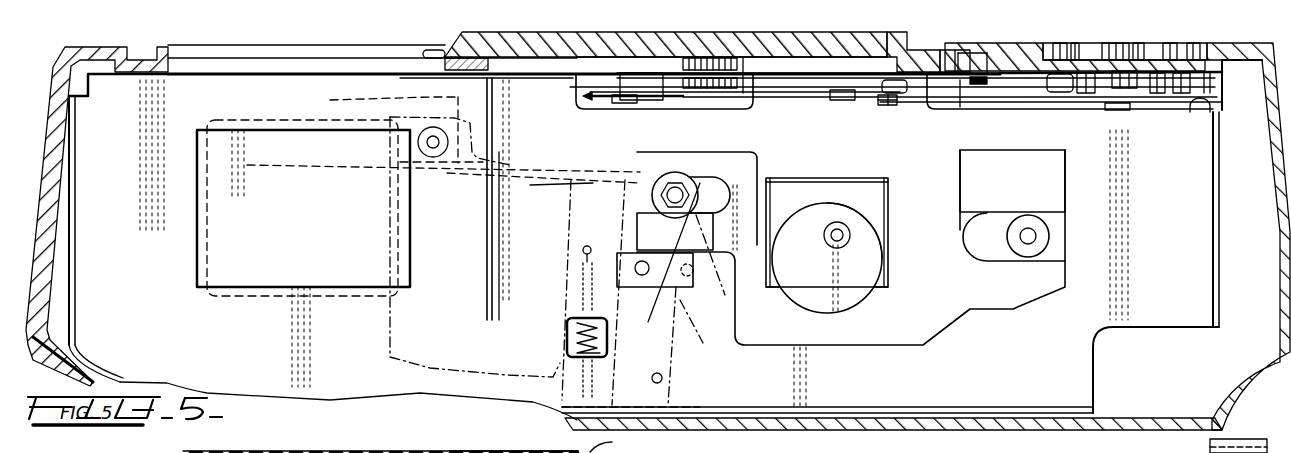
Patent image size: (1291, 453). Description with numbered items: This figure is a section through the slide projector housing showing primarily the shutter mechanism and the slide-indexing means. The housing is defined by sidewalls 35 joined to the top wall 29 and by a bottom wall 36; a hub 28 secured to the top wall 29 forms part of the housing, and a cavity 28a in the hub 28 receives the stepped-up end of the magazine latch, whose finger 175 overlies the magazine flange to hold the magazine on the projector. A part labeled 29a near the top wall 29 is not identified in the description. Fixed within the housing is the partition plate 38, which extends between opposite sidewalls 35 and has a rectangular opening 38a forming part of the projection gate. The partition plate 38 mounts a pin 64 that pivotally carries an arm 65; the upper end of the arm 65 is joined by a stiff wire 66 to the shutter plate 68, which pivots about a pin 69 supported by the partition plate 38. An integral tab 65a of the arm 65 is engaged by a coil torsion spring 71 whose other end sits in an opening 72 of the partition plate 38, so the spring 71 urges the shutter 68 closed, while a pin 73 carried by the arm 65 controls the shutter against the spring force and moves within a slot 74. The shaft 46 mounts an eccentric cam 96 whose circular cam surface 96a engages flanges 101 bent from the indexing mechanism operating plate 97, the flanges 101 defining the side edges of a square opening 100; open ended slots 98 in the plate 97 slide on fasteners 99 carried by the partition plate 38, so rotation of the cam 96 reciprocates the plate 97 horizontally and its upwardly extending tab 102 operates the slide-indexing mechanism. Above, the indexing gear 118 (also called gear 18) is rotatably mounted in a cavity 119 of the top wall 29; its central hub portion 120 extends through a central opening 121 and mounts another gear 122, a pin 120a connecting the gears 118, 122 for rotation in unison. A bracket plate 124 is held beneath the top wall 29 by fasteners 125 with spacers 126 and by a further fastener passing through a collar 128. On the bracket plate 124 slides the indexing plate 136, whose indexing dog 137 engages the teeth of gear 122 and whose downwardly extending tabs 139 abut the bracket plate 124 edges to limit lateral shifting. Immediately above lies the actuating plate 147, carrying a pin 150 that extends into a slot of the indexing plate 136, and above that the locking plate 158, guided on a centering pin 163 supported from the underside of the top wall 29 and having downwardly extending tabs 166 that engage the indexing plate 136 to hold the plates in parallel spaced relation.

The cover plate 29a is at (315, 52).
The top wall 29 is at (950, 50).
The tab 102 is at (853, 67).
The cavity 119 is at (1072, 52).
The indexing gear 118 is at (1113, 53).
The spacers 126 is at (1213, 83).
The fasteners 125 is at (1210, 110).
The indexing plate 136 is at (583, 96).
The indexing dog 137 is at (1047, 84).
The pin 150 is at (613, 82).
The locking plate 158 is at (662, 78).
The bracket plate 124 is at (677, 100).
The collar 128 is at (747, 70).
The actuating plate 147 is at (832, 90).
The tabs 139 is at (885, 105).
The tabs 166 is at (957, 85).
The centering pin 163 is at (993, 83).
The gear 122 is at (1080, 85).
The hub portion 120 is at (1110, 82).
The central opening 121 is at (1135, 67).
The pin 120a is at (1117, 110).
The shutter plate 68 is at (345, 108).
The pin 69 is at (433, 142).
The stiff wire 66 is at (587, 168).
The fasteners 99 is at (690, 180).
The square opening 100 is at (837, 182).
The circular cam surface 96a is at (845, 226).
The open ended slots 98 is at (637, 208).
The indexing mechanism operating plate 97 is at (1048, 182).
The partition plate 38 is at (125, 198).
The sidewalls 35 is at (50, 187).
The rectangular opening 38a is at (305, 287).
The opening 72 is at (583, 252).
The pin 73 is at (640, 268).
The shaft 46 is at (830, 232).
The cam 96 is at (802, 266).
The flanges 101 is at (775, 288).
The coil torsion spring 71 is at (570, 340).
The slot 74 is at (641, 298).
The arm 65 is at (703, 343).
The tab 65a is at (578, 410).
The pin 64 is at (663, 384).
The bottom wall 36 is at (842, 427).
The hub 28 is at (358, 450).
The cavity 28a is at (533, 450).
The finger 175 is at (625, 440).
The gear 18 is at (1252, 443).